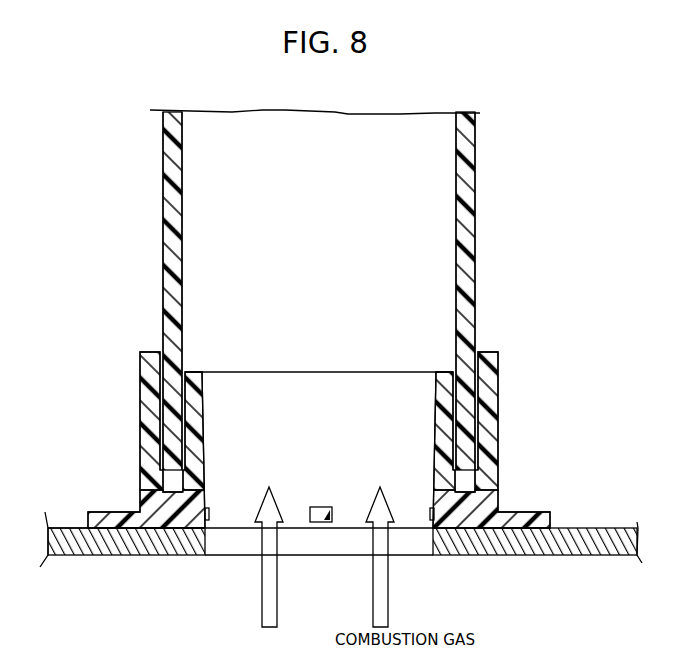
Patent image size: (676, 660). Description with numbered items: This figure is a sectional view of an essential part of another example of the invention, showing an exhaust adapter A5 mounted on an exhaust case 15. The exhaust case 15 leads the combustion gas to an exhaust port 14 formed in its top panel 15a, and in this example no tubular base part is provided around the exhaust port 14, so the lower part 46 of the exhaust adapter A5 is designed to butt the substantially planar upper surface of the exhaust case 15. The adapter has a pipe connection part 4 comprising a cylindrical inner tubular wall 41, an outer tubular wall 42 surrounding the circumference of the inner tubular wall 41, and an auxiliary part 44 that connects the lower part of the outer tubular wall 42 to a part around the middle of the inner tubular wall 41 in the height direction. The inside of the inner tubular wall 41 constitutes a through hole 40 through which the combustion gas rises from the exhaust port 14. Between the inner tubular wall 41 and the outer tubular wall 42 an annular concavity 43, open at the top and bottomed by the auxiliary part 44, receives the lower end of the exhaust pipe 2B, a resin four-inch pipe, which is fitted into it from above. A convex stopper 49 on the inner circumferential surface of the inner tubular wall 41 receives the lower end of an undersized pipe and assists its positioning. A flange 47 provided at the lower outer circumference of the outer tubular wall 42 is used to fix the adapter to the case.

The exhaust pipe 2B is at (167, 167).
The pipe connection part 4 is at (153, 410).
The outer tubular wall 42 is at (150, 357).
The inner tubular wall 41 is at (193, 383).
The annular concavity 43 is at (178, 482).
The auxiliary part 44 is at (163, 513).
The through hole 40 is at (277, 400).
The exhaust adapter A5 is at (504, 425).
The flange 47 is at (523, 518).
The lower part 46 is at (481, 535).
The exhaust case 15 is at (329, 542).
The top panel 15a is at (79, 540).
The exhaust port 14 is at (318, 547).
The stopper 49 is at (208, 513).